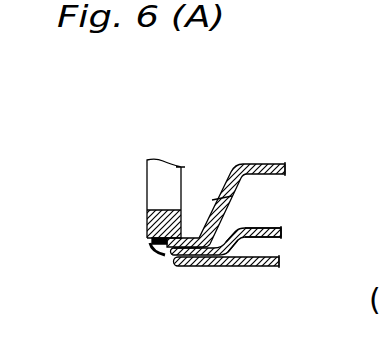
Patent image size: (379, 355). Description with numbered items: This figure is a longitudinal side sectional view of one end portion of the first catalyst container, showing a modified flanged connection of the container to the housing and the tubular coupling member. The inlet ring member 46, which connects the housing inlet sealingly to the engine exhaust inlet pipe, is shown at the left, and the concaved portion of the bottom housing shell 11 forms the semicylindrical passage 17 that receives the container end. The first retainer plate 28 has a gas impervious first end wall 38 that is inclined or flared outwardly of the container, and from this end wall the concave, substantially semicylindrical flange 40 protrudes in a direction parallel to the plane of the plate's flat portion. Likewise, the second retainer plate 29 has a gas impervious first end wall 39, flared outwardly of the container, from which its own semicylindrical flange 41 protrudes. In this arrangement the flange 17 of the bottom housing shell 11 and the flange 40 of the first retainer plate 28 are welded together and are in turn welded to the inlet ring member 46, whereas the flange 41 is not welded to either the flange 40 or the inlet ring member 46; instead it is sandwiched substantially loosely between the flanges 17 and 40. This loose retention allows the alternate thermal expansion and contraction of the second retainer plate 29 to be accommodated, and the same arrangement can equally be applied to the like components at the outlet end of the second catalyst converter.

The first retainer plate 28 is at (240, 163).
The first end wall 38 is at (224, 200).
The first end wall 39 is at (238, 240).
The second retainer plate 29 is at (256, 229).
The inlet ring member 46 is at (157, 221).
The semicylindrical flange 40 is at (164, 246).
The semicylindrical passage 17 is at (172, 257).
The semicylindrical flange 41 is at (213, 266).
The bottom housing shell 11 is at (256, 266).